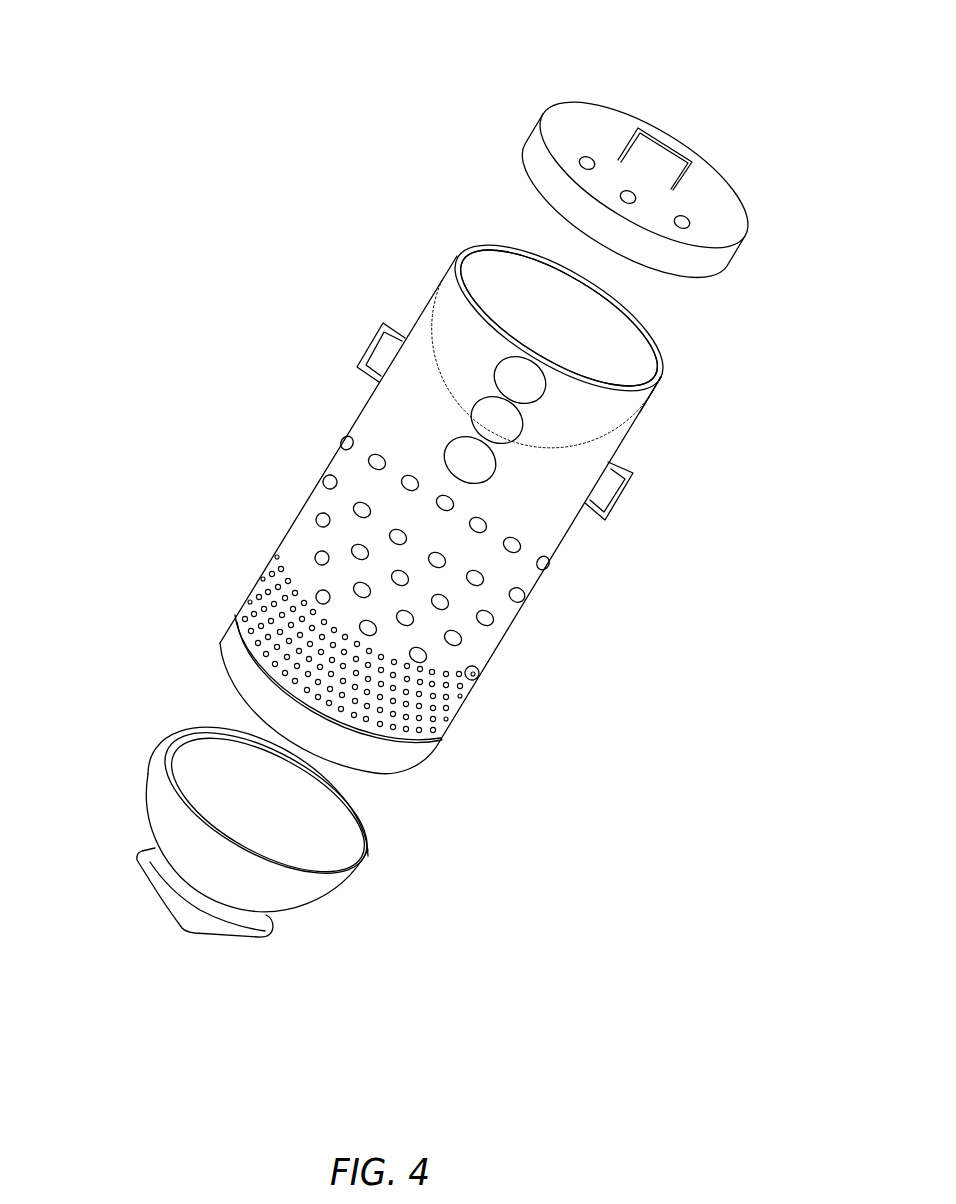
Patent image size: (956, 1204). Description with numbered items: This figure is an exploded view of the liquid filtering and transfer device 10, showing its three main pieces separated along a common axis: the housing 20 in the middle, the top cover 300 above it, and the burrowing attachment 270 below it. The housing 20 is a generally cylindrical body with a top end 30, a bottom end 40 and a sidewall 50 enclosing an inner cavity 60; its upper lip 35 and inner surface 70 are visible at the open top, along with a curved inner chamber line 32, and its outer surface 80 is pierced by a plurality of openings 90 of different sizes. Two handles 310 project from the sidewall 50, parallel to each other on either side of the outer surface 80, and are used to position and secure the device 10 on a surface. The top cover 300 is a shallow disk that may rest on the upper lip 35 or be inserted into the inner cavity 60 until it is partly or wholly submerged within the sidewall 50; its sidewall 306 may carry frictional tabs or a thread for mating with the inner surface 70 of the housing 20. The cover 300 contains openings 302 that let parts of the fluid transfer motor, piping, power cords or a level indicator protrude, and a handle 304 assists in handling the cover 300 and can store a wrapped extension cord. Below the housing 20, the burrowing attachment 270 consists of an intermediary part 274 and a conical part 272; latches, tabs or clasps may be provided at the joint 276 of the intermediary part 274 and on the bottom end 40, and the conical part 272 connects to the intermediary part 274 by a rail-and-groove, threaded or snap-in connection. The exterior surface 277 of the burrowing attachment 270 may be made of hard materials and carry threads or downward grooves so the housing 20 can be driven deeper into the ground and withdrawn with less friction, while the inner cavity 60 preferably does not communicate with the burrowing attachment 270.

The liquid filtering and transfer device 10 is at (297, 130).
The housing 20 is at (337, 363).
The top end 30 is at (663, 367).
The inner chamber 32 is at (610, 417).
The upper lip 35 is at (660, 383).
The bottom end 40 is at (403, 785).
The sidewall 50 is at (543, 603).
The inner cavity 60 is at (493, 277).
The inner surface 70 is at (620, 332).
The outer surface 80 is at (462, 703).
The plurality of openings 90 is at (306, 516).
The burrowing attachment 270 is at (313, 921).
The conical part 272 is at (217, 938).
The intermediary part 274 is at (148, 800).
The joint 276 is at (183, 718).
The exterior surface 277 is at (165, 902).
The top cover 300 is at (592, 101).
The openings 302 is at (684, 221).
The handle 304 is at (664, 148).
The sidewall 306 is at (703, 260).
The handles 310 is at (384, 341).